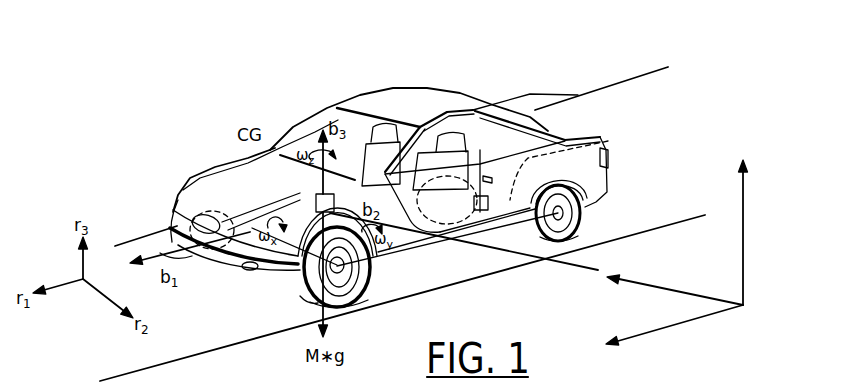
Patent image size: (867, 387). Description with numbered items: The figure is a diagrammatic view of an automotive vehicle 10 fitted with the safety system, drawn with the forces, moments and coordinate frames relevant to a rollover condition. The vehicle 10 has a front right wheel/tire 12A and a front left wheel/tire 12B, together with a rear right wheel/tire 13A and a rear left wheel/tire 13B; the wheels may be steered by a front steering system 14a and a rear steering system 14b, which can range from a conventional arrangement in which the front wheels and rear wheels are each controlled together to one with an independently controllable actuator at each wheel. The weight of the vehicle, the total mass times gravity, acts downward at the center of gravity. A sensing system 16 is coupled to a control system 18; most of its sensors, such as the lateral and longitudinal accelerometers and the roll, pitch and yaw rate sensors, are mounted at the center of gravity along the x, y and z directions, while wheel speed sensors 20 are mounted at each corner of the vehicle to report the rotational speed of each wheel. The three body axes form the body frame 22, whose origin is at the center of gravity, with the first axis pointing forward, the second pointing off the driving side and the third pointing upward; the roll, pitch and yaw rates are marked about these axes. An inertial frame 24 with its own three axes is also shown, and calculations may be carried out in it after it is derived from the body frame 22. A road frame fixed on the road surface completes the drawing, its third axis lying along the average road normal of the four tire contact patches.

The automotive vehicle 10 is at (405, 99).
The front right wheel/tire 12A is at (176, 184).
The front left wheel/tire 12B is at (366, 276).
The rear right wheel/tire 13A is at (452, 175).
The rear left wheel/tire 13B is at (575, 231).
The front steering system 14a is at (333, 266).
The rear steering system 14b is at (608, 141).
The sensing system 16 is at (340, 197).
The control system 18 is at (481, 196).
The wheel speed sensors 20 is at (360, 293).
The body frame 22 is at (160, 253).
The inertial frame 24 is at (745, 307).